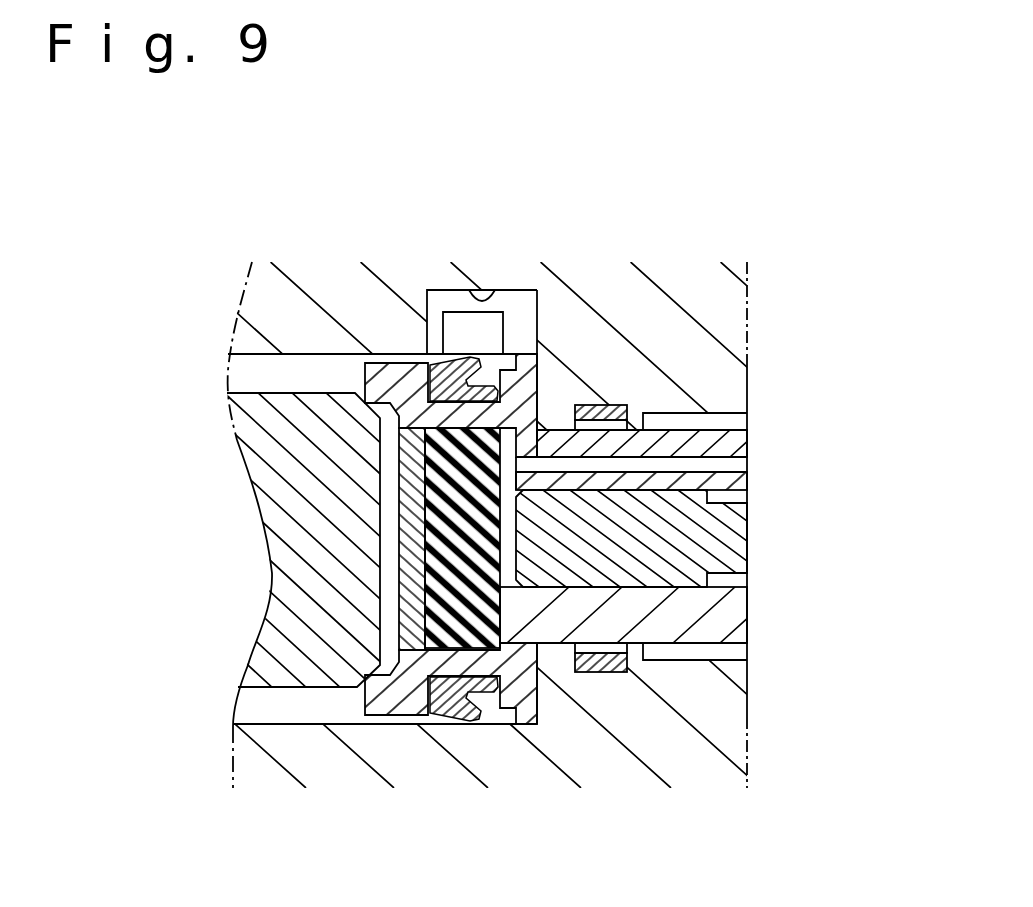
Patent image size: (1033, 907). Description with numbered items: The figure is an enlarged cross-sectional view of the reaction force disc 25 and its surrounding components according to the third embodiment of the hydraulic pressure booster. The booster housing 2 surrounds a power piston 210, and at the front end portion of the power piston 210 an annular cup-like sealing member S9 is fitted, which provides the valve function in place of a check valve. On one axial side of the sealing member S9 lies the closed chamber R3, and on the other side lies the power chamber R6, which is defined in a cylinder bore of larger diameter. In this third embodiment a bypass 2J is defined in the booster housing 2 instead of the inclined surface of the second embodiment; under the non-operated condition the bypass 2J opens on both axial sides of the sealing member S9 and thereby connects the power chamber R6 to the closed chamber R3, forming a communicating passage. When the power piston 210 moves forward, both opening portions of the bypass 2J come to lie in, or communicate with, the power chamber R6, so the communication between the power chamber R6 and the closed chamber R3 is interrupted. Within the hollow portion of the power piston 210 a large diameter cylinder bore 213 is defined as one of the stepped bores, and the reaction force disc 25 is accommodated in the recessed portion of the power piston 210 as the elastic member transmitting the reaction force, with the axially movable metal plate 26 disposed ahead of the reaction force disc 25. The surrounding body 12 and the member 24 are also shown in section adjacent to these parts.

The booster housing 2 is at (700, 360).
The bypass 2J is at (482, 303).
The closed chamber R3 is at (273, 380).
The rotary body 12 is at (300, 505).
The reaction force disc 25 is at (443, 593).
The metal plate 26 is at (450, 580).
The sealing member S9 is at (443, 717).
The power chamber R6 is at (503, 713).
The power piston 210 is at (707, 441).
The large diameter cylinder bore 213 is at (703, 466).
The shaft 24 is at (713, 533).